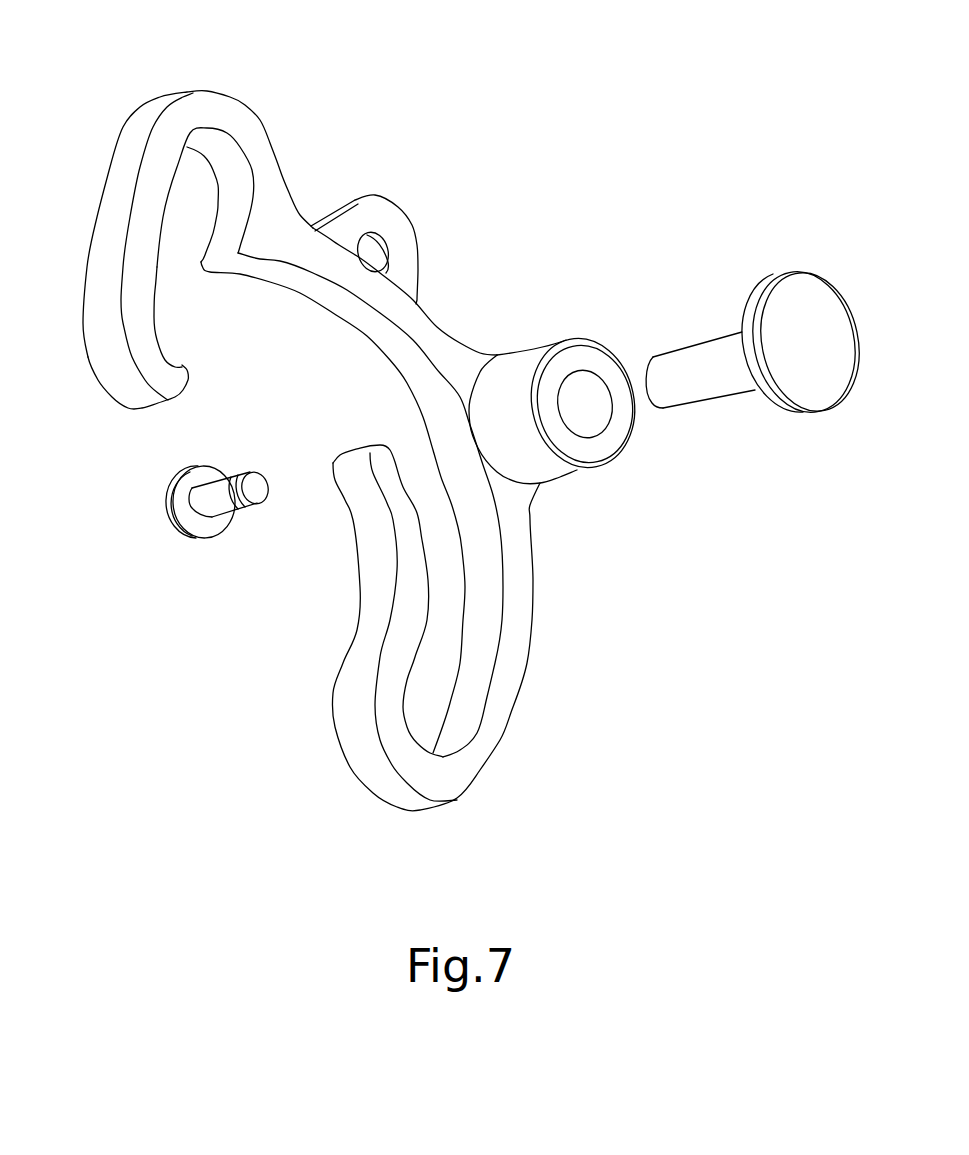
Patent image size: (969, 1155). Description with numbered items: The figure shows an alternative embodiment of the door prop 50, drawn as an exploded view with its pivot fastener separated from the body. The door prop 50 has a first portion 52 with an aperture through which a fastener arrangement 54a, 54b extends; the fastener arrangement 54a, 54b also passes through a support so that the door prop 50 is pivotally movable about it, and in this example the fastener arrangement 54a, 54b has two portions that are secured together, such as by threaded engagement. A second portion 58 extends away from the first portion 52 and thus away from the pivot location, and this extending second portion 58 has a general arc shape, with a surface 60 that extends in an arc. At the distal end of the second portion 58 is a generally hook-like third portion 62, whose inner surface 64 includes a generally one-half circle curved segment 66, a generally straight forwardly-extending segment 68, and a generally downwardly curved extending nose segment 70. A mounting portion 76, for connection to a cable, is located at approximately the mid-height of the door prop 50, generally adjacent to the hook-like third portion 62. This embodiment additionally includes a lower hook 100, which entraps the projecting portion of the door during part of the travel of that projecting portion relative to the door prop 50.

The door prop 50 is at (135, 63).
The hook-like third portion 62 is at (120, 158).
The inner surface 64 is at (157, 315).
The one-half circle curved segment 66 is at (222, 163).
The straight forwardly-extending segment 68 is at (163, 230).
The nose segment 70 is at (183, 370).
The surface 60 is at (350, 313).
The second portion 58 is at (423, 327).
The mounting portion 76 is at (407, 245).
The first portion 52 is at (578, 337).
The fastener arrangement 54a is at (210, 528).
The fastener arrangement 54b is at (823, 305).
The lower hook 100 is at (365, 625).